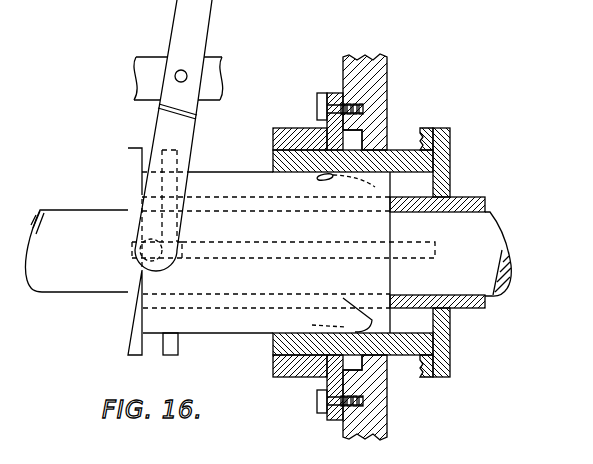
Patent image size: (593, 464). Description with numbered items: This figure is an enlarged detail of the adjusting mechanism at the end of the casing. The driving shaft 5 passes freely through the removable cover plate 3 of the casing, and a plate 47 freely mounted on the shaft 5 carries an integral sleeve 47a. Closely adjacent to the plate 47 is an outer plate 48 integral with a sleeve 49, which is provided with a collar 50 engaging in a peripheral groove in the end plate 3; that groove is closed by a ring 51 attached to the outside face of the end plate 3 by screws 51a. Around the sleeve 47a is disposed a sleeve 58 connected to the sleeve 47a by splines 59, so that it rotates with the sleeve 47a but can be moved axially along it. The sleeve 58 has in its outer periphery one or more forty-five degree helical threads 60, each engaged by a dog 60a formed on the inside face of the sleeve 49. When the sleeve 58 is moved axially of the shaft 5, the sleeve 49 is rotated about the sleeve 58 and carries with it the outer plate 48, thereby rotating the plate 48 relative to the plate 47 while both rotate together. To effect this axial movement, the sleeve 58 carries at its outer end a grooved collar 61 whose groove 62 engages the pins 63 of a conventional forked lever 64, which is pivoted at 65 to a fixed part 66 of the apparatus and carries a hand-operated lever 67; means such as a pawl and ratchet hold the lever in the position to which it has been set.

The cover plate 3 is at (348, 75).
The driving shaft 5 is at (82, 278).
The plate 47 is at (450, 147).
The sleeve 47a is at (200, 205).
The outer plate 48 is at (430, 128).
The sleeve 49 is at (278, 167).
The collar 50 is at (365, 132).
The ring 51 is at (300, 128).
The screws 51a is at (319, 97).
The sleeve 58 is at (231, 318).
The splines 59 is at (400, 252).
The helical threads 60 is at (375, 186).
The dog 60a is at (334, 182).
The grooved collar 61 is at (132, 153).
The groove 62 is at (157, 342).
The pins 63 is at (128, 270).
The forked lever 64 is at (167, 125).
The pivot 65 is at (186, 72).
The fixed part 66 is at (208, 77).
The hand-operated lever 67 is at (205, 10).